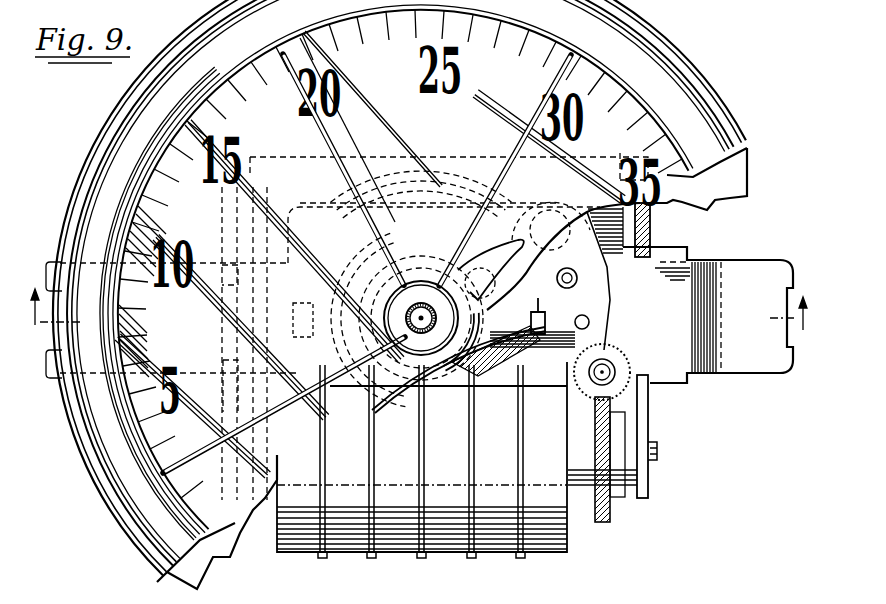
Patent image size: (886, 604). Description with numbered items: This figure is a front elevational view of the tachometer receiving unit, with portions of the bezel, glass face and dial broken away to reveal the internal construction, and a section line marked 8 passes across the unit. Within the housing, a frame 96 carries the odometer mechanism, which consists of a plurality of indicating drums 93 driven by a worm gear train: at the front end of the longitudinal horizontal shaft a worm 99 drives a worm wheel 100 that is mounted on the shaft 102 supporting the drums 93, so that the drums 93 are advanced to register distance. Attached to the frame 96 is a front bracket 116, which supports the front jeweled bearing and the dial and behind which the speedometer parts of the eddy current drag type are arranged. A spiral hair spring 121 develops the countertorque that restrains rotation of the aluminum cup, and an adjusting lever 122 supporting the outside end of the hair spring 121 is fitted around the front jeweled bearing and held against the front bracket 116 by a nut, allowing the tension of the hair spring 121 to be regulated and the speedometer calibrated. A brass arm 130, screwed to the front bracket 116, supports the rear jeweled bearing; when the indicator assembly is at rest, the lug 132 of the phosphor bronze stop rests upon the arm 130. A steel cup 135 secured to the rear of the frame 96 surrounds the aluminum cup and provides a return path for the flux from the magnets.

The section line 8- 8 is at (418, 321).
The indicating drums 93 is at (448, 536).
The frame 96 is at (650, 492).
The worm 99 is at (630, 358).
The worm wheel 100 is at (603, 521).
The shaft 102 is at (660, 451).
The front bracket 116 is at (725, 365).
The hair spring 121 is at (432, 244).
The adjusting lever 122 is at (300, 316).
The brass arm 130 is at (474, 266).
The lug 132 is at (528, 342).
The steel cup 135 is at (462, 180).